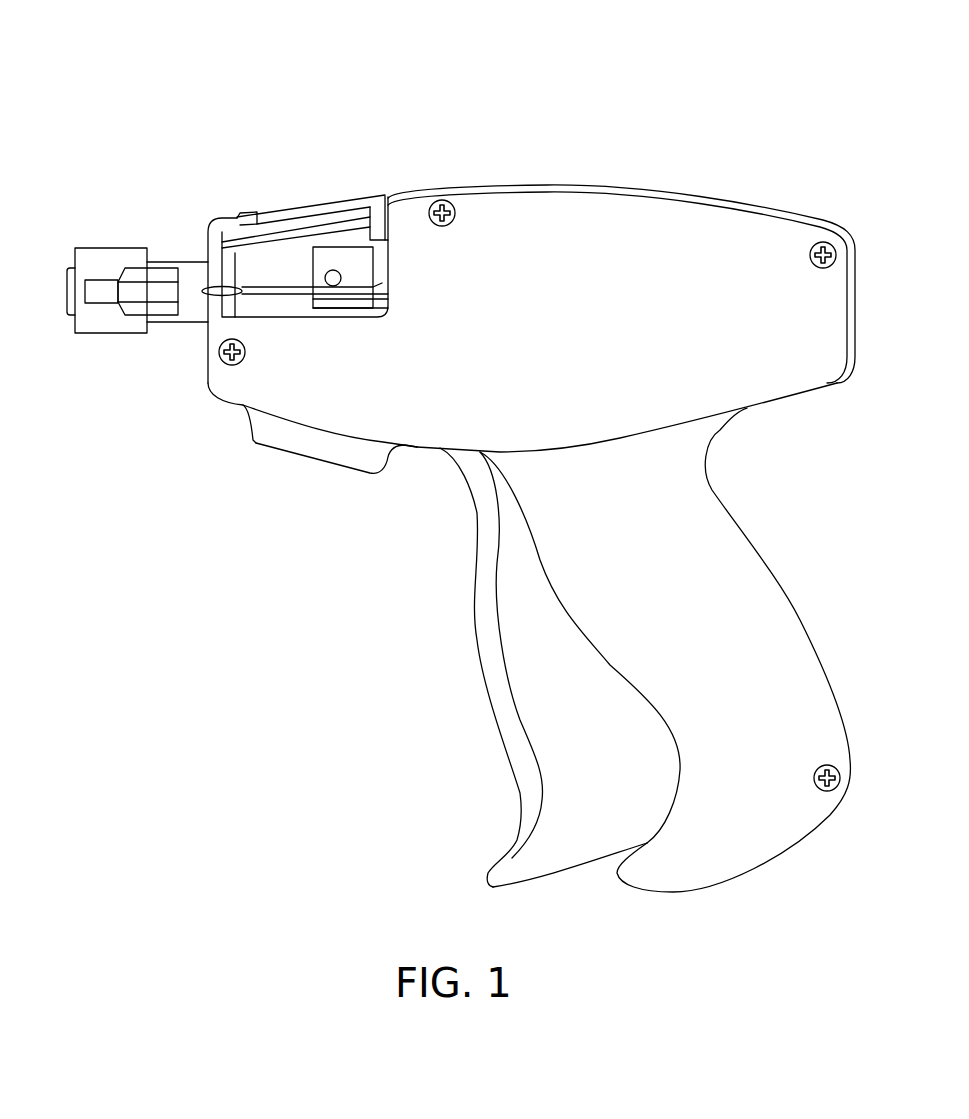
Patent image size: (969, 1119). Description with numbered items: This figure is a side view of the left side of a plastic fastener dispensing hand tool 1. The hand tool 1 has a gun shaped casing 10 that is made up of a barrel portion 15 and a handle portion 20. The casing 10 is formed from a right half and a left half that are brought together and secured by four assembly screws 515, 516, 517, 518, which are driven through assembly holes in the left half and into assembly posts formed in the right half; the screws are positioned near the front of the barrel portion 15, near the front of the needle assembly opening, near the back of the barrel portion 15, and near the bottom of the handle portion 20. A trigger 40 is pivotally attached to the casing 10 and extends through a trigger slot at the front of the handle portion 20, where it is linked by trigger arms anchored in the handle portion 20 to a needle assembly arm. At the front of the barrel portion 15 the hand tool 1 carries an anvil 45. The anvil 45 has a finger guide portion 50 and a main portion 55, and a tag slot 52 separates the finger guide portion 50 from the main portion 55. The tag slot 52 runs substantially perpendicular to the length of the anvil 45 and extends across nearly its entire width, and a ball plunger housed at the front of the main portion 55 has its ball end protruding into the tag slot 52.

The plastic fastener dispensing hand tool 1 is at (693, 100).
The gun shaped casing 10 is at (752, 197).
The barrel portion 15 is at (513, 173).
The handle portion 20 is at (825, 577).
The trigger 40 is at (518, 793).
The anvil 45 is at (212, 193).
The finger guide portion 50 is at (92, 231).
The tag slot 52 is at (192, 302).
The main portion 55 is at (322, 198).
The assembly screw 515 is at (245, 355).
The assembly screw 516 is at (450, 224).
The assembly screw 517 is at (812, 265).
The assembly screw 518 is at (818, 769).